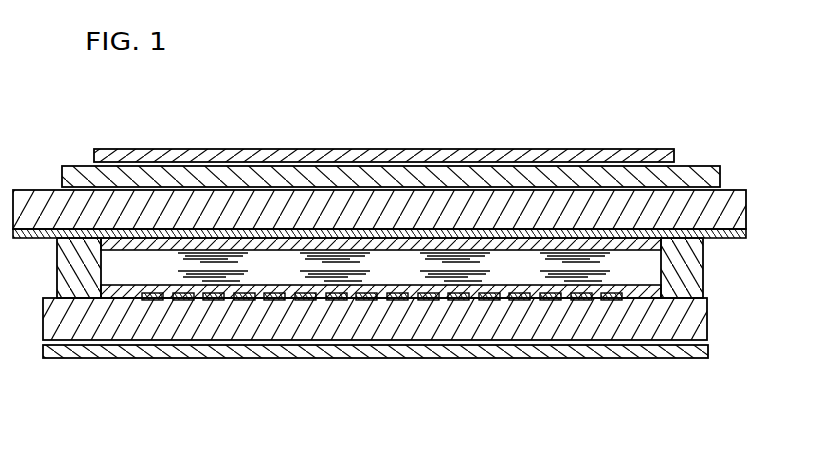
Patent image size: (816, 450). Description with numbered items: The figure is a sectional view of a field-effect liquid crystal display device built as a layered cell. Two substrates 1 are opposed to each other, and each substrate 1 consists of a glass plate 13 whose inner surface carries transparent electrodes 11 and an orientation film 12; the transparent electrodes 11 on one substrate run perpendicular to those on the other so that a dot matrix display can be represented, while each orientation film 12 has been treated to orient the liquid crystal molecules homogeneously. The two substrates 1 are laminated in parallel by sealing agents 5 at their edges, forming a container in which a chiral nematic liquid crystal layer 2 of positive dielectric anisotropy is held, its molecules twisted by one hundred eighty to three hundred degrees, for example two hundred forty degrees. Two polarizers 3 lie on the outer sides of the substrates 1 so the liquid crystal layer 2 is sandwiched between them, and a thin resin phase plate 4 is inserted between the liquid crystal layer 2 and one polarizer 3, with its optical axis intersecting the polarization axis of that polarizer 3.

The substrate 1 is at (744, 185).
The liquid crystal layer 2 is at (150, 265).
The polarizer 3 is at (339, 150).
The phase plate 4 is at (446, 176).
The sealing agent 5 is at (62, 286).
The transparent electrode 11 is at (205, 226).
The orientation film 12 is at (145, 238).
The glass plate 13 is at (44, 210).